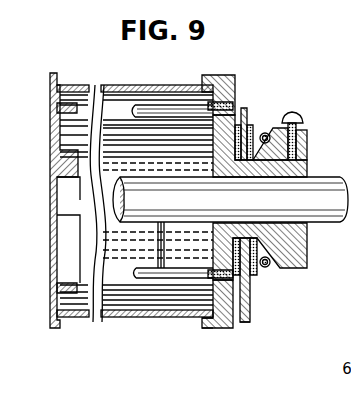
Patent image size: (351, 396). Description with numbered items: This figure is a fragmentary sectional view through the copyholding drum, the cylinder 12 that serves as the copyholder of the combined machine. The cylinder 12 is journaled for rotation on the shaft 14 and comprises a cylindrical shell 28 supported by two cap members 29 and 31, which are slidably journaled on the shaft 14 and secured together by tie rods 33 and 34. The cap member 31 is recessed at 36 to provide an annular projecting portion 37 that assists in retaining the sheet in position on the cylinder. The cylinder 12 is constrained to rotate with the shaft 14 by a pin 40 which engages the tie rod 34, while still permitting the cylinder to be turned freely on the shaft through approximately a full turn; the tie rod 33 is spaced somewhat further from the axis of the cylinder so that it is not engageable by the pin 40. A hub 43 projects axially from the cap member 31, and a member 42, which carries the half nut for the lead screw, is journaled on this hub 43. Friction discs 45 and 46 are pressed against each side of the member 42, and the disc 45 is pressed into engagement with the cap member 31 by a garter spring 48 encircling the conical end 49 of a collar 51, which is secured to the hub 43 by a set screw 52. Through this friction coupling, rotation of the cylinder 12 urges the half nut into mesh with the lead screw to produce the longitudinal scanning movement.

The copyholding drum 12 is at (112, 80).
The shaft 14 is at (312, 183).
The cylindrical shell 28 is at (116, 318).
The cap member 29 is at (51, 145).
The cap member 31 is at (238, 85).
The tie rod 33 is at (182, 86).
The tie rod 34 is at (152, 271).
The recess 36 is at (202, 318).
The annular projecting portion 37 is at (200, 326).
The pin 40 is at (160, 238).
The member 42 is at (250, 318).
The hub 43 is at (308, 237).
The friction disc 45 is at (251, 296).
The friction disc 46 is at (267, 268).
The garter spring 48 is at (265, 132).
The conical end 49 is at (276, 128).
The collar 51 is at (309, 144).
The set screw 52 is at (303, 119).